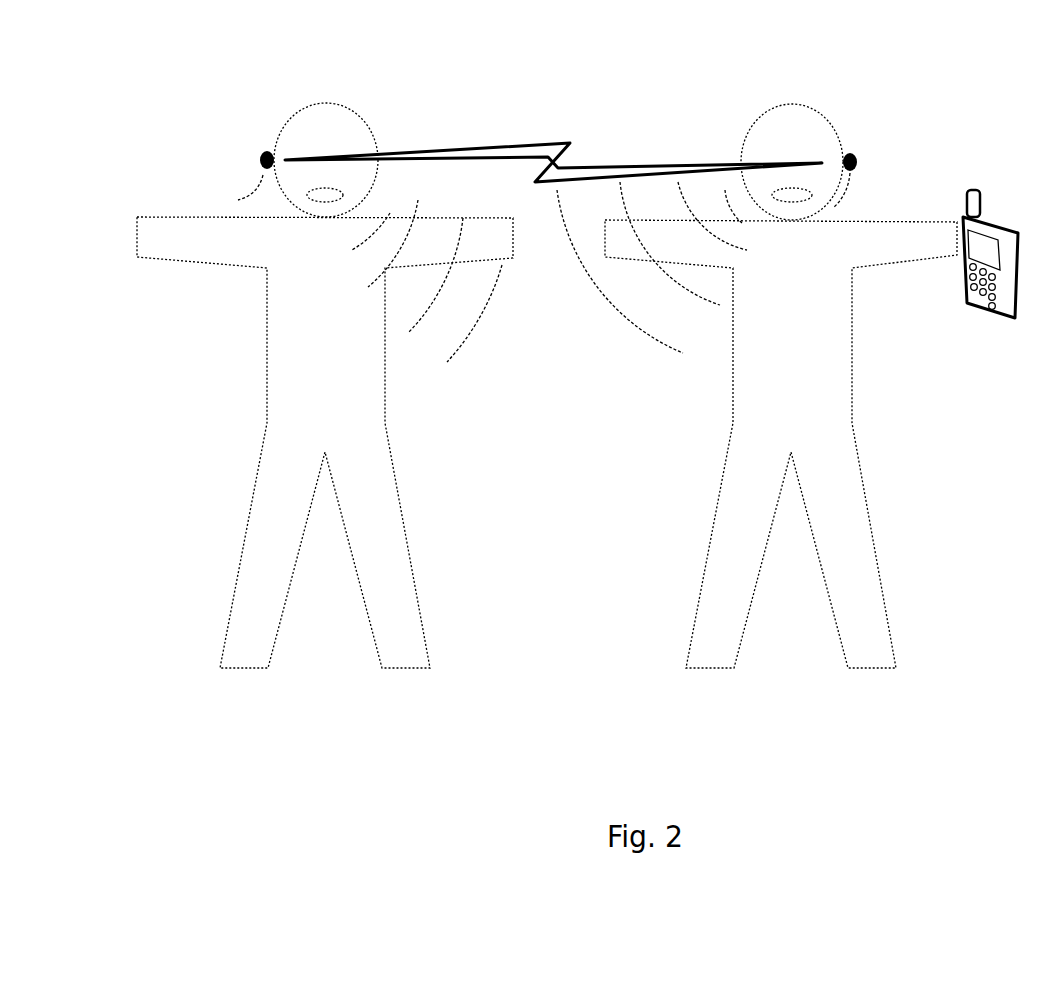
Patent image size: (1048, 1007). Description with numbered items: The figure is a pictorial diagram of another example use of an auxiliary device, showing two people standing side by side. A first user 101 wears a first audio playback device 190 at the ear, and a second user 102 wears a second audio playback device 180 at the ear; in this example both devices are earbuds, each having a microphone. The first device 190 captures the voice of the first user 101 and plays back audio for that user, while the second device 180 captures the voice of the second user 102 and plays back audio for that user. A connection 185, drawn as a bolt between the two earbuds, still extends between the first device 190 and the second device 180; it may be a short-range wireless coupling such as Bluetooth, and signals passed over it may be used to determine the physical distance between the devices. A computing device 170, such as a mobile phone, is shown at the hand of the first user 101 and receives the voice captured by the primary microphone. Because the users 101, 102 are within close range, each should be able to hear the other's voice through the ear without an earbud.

The first user 101 is at (757, 386).
The second user 102 is at (325, 385).
The computing device 170 is at (1018, 305).
The second audio playback device 180 is at (248, 153).
The connection 185 is at (540, 142).
The first audio playback device 190 is at (857, 157).